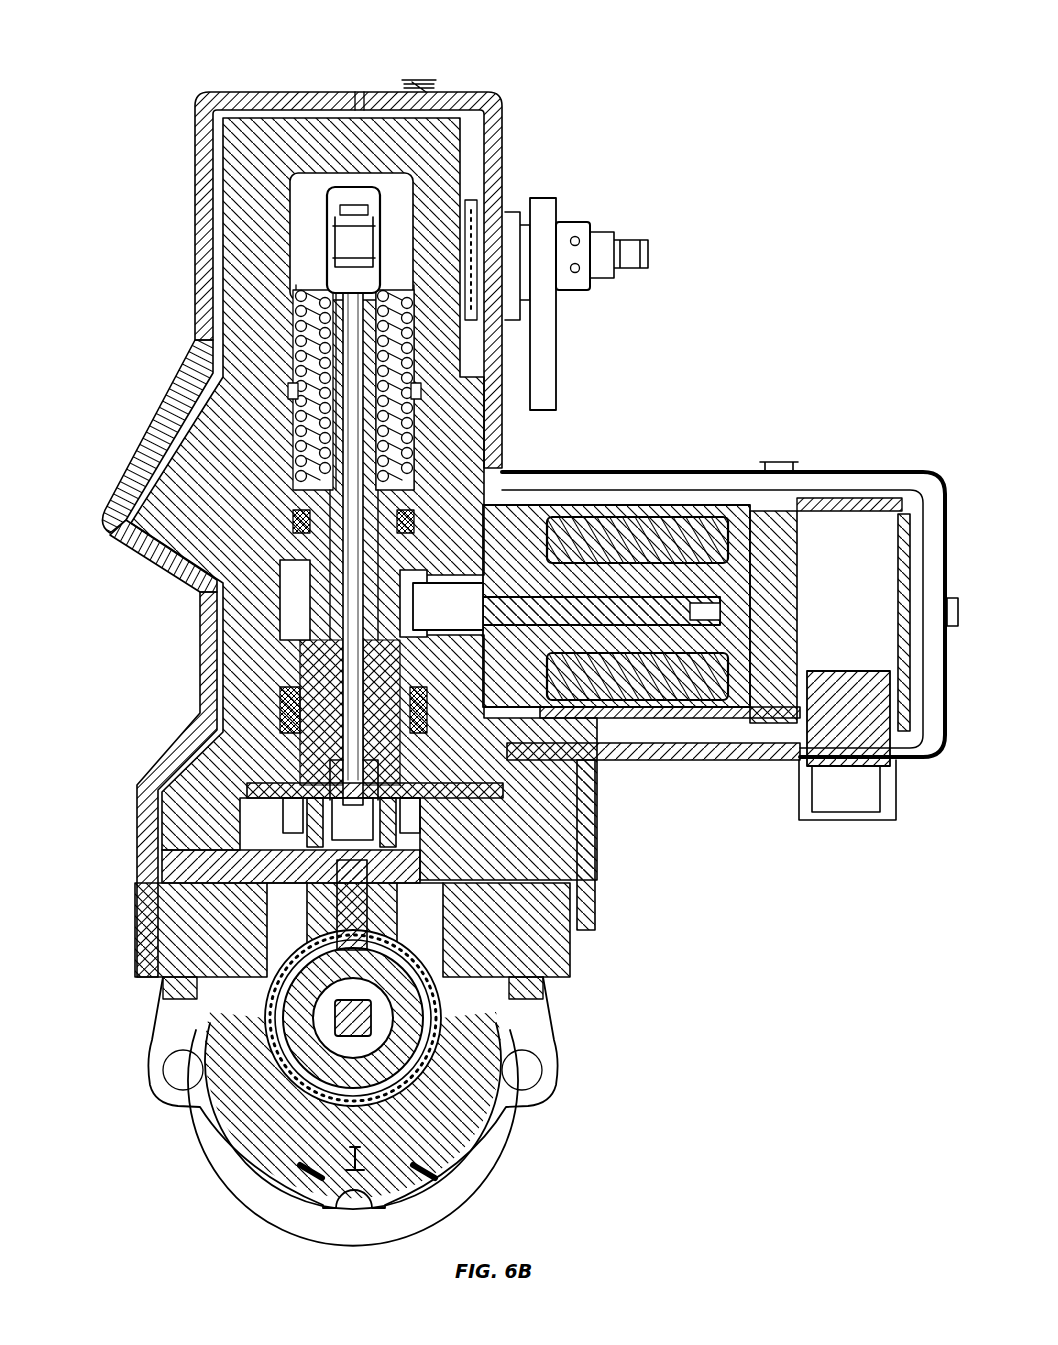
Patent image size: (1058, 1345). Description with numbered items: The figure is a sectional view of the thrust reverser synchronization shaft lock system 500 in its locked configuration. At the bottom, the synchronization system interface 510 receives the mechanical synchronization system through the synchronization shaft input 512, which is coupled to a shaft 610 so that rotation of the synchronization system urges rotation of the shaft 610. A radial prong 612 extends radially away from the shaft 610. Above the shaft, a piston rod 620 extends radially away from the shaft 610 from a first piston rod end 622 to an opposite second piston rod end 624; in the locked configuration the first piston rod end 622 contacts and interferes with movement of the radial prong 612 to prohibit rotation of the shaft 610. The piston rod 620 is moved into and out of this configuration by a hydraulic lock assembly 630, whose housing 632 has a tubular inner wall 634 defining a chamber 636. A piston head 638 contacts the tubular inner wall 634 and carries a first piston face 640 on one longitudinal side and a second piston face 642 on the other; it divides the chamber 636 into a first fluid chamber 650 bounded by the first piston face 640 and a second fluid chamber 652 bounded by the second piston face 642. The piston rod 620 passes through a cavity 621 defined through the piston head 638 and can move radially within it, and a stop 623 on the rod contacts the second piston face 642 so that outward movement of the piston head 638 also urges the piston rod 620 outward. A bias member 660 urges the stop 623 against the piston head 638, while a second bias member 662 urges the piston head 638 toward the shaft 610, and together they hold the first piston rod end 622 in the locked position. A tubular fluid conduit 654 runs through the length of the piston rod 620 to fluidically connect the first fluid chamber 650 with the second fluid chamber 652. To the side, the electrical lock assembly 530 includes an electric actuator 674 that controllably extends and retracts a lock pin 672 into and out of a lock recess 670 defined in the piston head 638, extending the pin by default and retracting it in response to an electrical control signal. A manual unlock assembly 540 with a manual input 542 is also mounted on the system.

The thrust reverser synchronization shaft lock system 500 is at (110, 52).
The synchronization system interface 510 is at (122, 1076).
The synchronization shaft input 512 is at (330, 1030).
The electrical lock assembly 530 is at (790, 385).
The manual unlock assembly 540 is at (600, 204).
The manual input 542 is at (557, 333).
The shaft 610 is at (415, 1073).
The radial prong 612 is at (425, 1090).
The piston rod 620 is at (370, 703).
The cavity 621 is at (203, 703).
The first piston rod end 622 is at (333, 928).
The stop 623 is at (300, 390).
The second piston rod end 624 is at (330, 205).
The hydraulic lock assembly 630 is at (333, 150).
The housing 632 is at (440, 195).
The tubular inner wall 634 is at (283, 637).
The chamber 636 is at (275, 822).
The piston head 638 is at (310, 595).
The first piston face 640 is at (290, 867).
The second piston face 642 is at (307, 487).
The first fluid chamber 650 is at (410, 818).
The second fluid chamber 652 is at (285, 183).
The tubular fluid conduit 654 is at (365, 208).
The bias member 660 is at (313, 310).
The bias member 662 is at (300, 382).
The lock recess 670 is at (407, 573).
The lock pin 672 is at (600, 720).
The electric actuator 674 is at (643, 517).